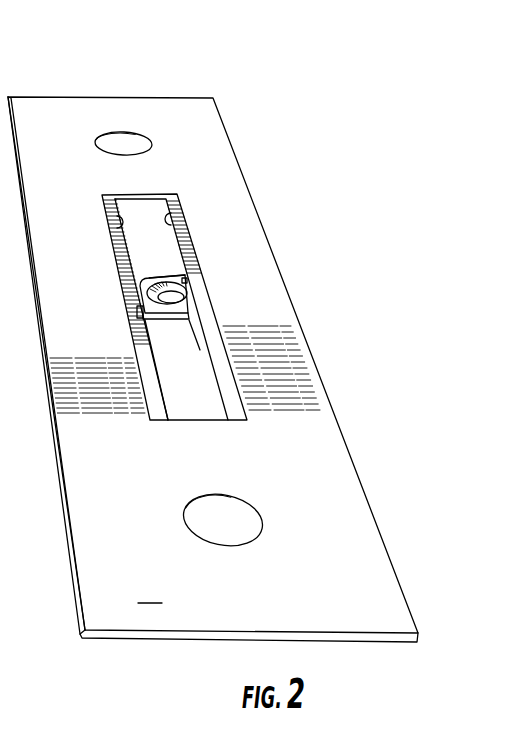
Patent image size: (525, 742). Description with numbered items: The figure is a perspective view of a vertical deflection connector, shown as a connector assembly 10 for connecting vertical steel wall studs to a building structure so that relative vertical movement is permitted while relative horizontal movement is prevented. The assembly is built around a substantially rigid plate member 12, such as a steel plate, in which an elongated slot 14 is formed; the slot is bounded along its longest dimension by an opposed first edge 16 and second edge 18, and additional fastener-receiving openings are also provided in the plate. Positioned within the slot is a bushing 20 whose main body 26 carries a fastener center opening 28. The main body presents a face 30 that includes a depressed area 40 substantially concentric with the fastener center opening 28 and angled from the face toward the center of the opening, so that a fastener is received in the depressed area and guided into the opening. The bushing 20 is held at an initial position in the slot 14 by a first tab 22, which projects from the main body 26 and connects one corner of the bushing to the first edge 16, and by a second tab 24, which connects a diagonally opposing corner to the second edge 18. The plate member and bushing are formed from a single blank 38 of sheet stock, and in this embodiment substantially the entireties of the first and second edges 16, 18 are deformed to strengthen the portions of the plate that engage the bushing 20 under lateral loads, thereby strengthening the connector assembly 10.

The connector assembly 10 is at (213, 342).
The plate member 12 is at (190, 103).
The elongated slot 14 is at (147, 208).
The first edge 16 is at (124, 226).
The second edge 18 is at (163, 220).
The bushing 20 is at (196, 323).
The first tab 22 is at (143, 311).
The second tab 24 is at (187, 277).
The main body 26 is at (168, 320).
The fastener center opening 28 is at (163, 295).
The face 30 is at (147, 279).
The blank 38 is at (150, 590).
The depressed area 40 is at (187, 283).